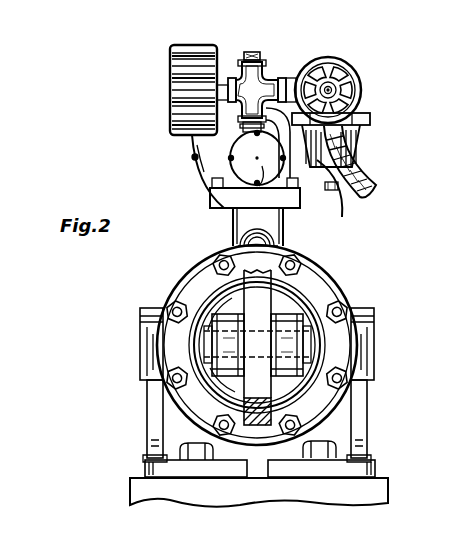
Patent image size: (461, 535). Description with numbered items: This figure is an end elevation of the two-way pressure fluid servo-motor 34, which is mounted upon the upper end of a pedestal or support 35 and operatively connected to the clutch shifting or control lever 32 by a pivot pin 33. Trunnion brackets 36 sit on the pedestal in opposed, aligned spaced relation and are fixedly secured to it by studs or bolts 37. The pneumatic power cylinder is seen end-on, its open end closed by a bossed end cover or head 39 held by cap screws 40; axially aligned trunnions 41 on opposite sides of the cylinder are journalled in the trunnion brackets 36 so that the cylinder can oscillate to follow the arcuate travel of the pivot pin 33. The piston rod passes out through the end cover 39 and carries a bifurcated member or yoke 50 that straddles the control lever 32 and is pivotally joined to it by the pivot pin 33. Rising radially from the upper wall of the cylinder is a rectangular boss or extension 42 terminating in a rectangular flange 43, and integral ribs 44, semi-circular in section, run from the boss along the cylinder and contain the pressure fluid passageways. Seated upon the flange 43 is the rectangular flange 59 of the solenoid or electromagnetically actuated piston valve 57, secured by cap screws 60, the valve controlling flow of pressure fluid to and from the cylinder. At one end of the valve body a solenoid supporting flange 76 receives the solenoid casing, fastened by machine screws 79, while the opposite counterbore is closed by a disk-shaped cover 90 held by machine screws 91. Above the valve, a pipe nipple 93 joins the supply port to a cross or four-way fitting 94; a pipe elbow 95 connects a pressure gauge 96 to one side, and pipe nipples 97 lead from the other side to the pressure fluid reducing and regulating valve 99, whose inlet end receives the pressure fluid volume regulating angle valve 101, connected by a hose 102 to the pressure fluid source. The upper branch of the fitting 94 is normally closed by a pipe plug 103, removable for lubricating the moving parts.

The clutch shifting or control lever 32 is at (262, 293).
The pivot pin 33 is at (190, 298).
The two-way pressure fluid servo-motor 34 is at (367, 252).
The pedestal or support 35 is at (388, 480).
The trunnion brackets 36 is at (147, 398).
The studs or bolts 37 is at (183, 450).
The bossed end cover or head 39 is at (322, 293).
The cap screws 40 is at (170, 310).
The trunnions 41 is at (140, 338).
The rectangular boss or extension 42 is at (237, 230).
The rectangular flange 43 is at (230, 210).
The integral ribs 44 is at (284, 238).
The bifurcated member or yoke 50 is at (227, 303).
The solenoid or electromagnetically actuated piston valve 57 is at (180, 152).
The rectangular flange 59 is at (210, 189).
The cap screws 60 is at (200, 170).
The solenoid supporting flange 76 is at (193, 146).
The machine screws 79 is at (192, 159).
The disk-shaped cover 90 is at (263, 172).
The machine screws 91 is at (204, 150).
The pipe nipple 93 is at (248, 97).
The cross or four-way fitting 94 is at (284, 78).
The pipe elbow 95 is at (222, 80).
The pressure gauge 96 is at (170, 80).
The pipe nipples 97 is at (304, 75).
The pressure fluid reducing and regulating valve 99 is at (370, 146).
The pressure fluid volume regulating angle valve 101 is at (360, 70).
The hose 102 is at (372, 187).
The pipe plug 103 is at (259, 52).